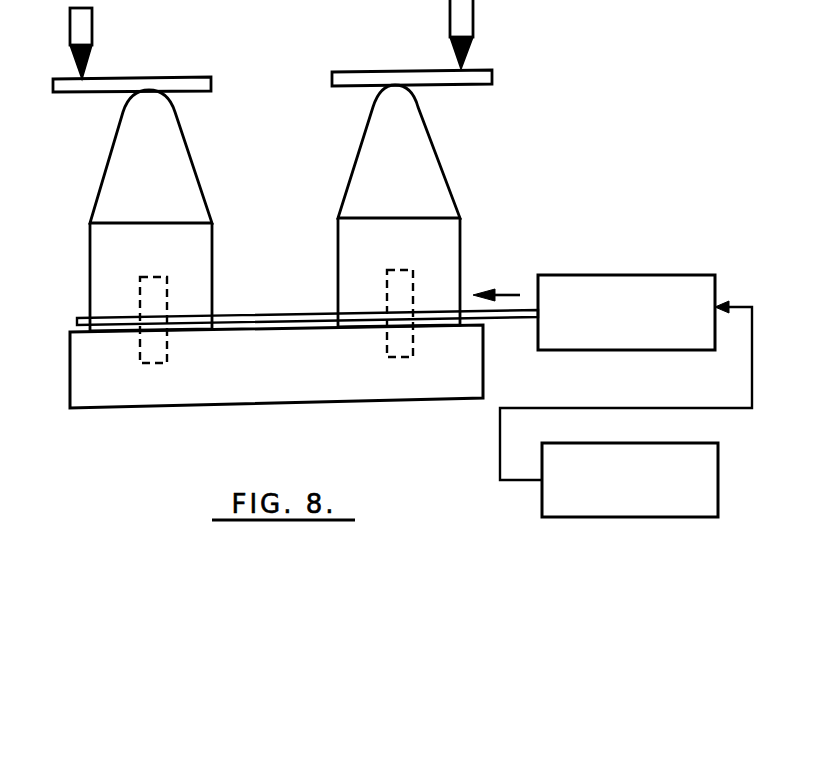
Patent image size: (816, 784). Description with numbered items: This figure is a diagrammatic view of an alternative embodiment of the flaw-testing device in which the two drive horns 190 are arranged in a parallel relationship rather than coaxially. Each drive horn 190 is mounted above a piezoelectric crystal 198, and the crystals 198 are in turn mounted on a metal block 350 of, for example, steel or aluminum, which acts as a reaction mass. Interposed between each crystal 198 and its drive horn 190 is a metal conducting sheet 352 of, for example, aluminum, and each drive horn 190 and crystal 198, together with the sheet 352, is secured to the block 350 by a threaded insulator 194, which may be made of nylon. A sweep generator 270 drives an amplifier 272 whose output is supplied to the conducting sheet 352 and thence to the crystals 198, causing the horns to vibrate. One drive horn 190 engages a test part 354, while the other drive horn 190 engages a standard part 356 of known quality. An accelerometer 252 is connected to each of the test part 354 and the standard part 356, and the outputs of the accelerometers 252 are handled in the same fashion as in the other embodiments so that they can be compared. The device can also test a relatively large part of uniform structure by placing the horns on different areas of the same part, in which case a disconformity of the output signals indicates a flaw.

The accelerometer 252 is at (87, 23).
The test part 354 is at (183, 77).
The standard part 356 is at (374, 72).
The drive horn 190 is at (125, 193).
The threaded insulator 194 is at (165, 347).
The metal conducting sheet 352 is at (84, 318).
The piezoelectric crystal 198 is at (109, 327).
The metal block 350 is at (166, 398).
The amplifier 272 is at (593, 340).
The sweep generator 270 is at (603, 508).